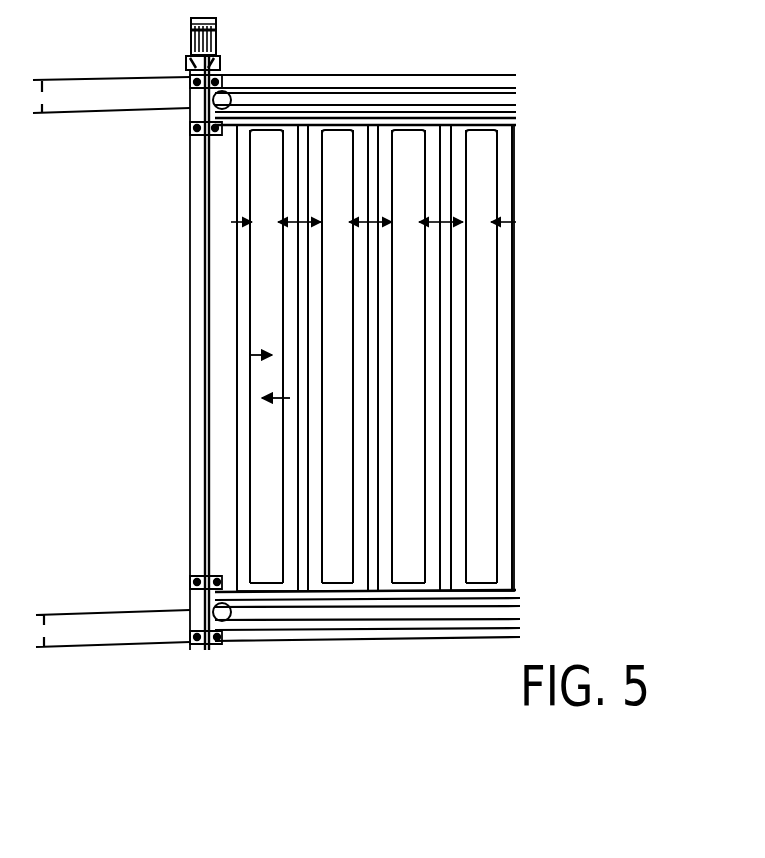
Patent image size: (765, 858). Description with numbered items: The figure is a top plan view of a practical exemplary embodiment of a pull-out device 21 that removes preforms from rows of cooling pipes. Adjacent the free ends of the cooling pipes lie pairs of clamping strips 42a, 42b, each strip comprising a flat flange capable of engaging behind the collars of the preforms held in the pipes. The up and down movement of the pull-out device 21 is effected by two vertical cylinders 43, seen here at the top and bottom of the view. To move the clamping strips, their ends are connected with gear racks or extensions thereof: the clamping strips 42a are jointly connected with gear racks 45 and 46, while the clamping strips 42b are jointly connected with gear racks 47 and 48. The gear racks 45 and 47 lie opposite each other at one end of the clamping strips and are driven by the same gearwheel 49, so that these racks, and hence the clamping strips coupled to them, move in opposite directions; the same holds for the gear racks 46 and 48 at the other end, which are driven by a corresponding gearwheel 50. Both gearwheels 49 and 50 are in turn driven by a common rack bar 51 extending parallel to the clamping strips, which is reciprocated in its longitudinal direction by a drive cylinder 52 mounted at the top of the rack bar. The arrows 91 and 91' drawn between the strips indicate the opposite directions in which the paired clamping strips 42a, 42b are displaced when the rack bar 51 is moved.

The pull-out device 21 is at (548, 184).
The clamping strip 42a is at (362, 282).
The clamping strip 42b is at (317, 323).
The vertical cylinder 43 is at (366, 77).
The gear rack 45 is at (305, 98).
The gear rack 46 is at (196, 580).
The gear rack 47 is at (240, 125).
The gear rack 48 is at (204, 641).
The gearwheel 49 is at (196, 118).
The gearwheel 50 is at (192, 608).
The rack bar 51 is at (196, 186).
The drive cylinder 52 is at (190, 42).
The direction arrow 91 is at (206, 373).
The opposite direction arrow 91' is at (215, 417).